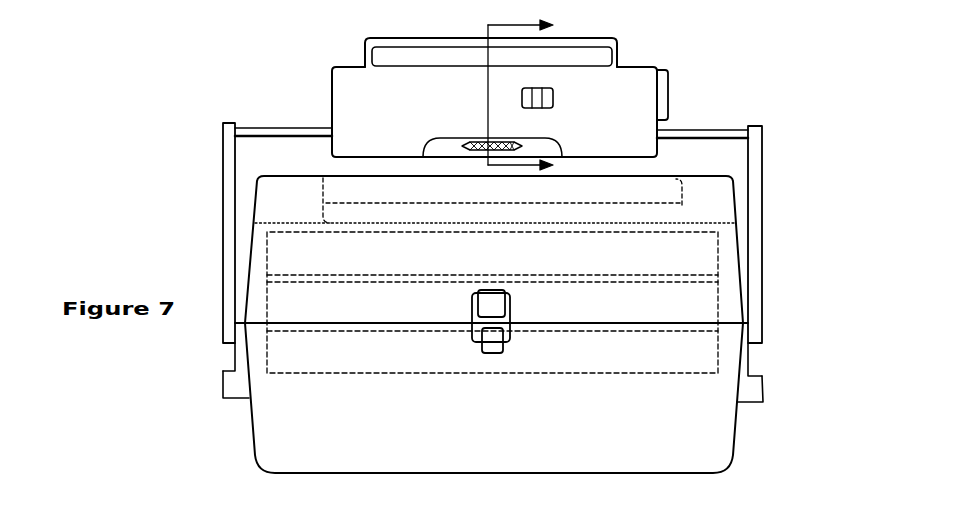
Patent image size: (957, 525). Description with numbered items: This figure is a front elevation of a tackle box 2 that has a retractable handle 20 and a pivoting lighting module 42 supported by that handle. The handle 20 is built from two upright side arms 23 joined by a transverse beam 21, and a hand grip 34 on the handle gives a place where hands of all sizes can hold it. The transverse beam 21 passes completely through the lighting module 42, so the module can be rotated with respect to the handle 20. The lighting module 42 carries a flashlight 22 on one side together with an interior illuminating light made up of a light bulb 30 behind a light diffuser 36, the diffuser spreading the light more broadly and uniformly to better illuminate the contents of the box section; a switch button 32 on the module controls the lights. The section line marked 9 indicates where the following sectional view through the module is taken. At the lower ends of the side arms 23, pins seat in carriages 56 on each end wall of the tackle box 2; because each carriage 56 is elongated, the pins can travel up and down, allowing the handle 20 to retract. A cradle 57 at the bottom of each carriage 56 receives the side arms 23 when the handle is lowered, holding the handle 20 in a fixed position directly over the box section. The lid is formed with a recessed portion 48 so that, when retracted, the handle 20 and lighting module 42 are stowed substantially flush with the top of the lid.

The tackle box 2 is at (226, 100).
The handle 20 is at (218, 145).
The transverse beam 21 is at (723, 128).
The flashlight 22 is at (680, 68).
The side arms 23 is at (763, 172).
The light bulb 30 is at (533, 147).
The switch button 32 is at (523, 92).
The hand grip 34 is at (567, 49).
The light diffuser 36 is at (443, 143).
The lighting module 42 is at (332, 66).
The recessed portion 48 is at (682, 207).
The carriage 56 is at (233, 354).
The cradle 57 is at (222, 386).
The section line 9- 9 is at (529, 95).